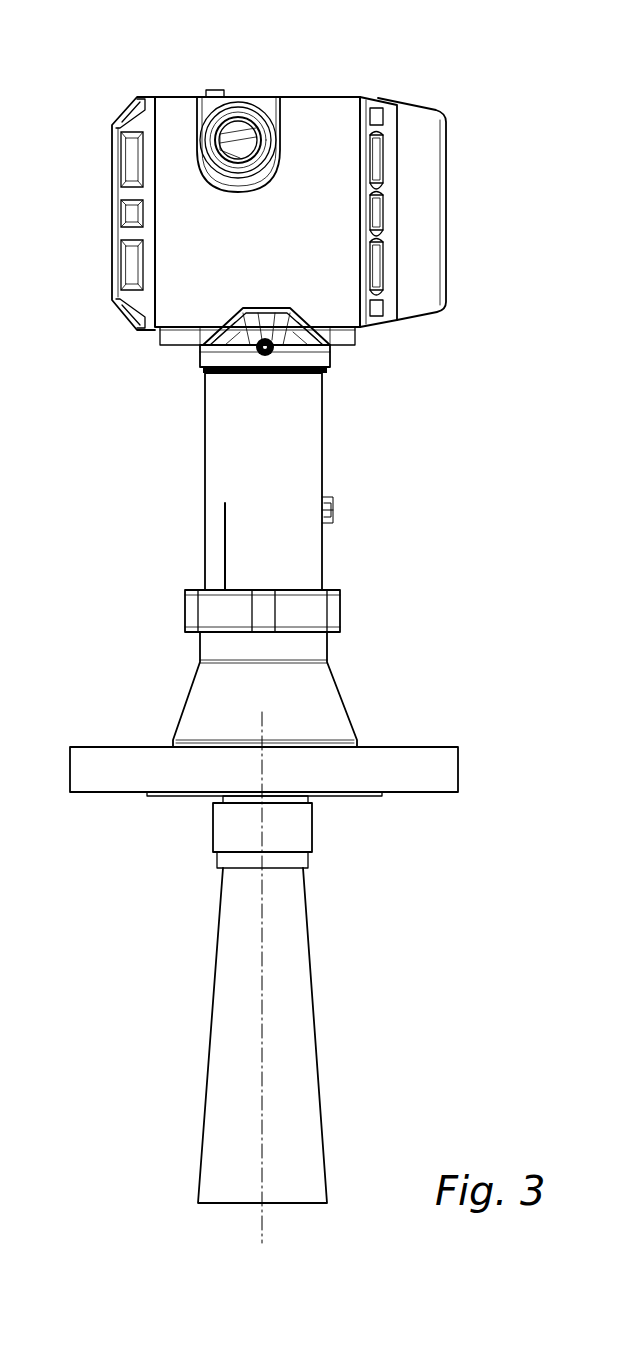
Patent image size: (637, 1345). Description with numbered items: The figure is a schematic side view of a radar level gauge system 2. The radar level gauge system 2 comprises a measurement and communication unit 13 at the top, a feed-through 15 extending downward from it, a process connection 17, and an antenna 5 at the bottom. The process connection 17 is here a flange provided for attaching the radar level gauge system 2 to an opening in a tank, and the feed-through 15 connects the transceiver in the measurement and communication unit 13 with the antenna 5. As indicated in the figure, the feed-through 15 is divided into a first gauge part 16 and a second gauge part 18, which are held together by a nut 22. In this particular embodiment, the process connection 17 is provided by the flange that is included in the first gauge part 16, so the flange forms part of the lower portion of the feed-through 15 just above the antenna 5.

The radar level gauge system 2 is at (500, 101).
The measurement and communication unit 13 is at (342, 97).
The feed-through 15 is at (150, 556).
The first gauge part 16 is at (185, 703).
The process connection 17 is at (467, 722).
The second gauge part 18 is at (205, 476).
The nut 22 is at (340, 613).
The antenna 5 is at (310, 971).